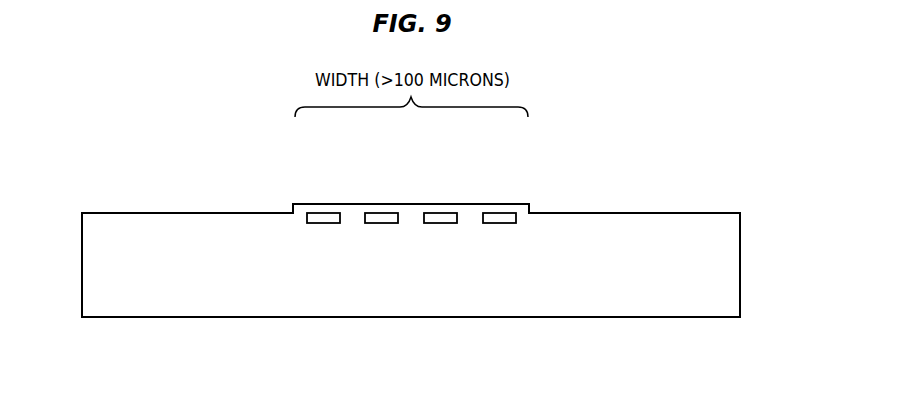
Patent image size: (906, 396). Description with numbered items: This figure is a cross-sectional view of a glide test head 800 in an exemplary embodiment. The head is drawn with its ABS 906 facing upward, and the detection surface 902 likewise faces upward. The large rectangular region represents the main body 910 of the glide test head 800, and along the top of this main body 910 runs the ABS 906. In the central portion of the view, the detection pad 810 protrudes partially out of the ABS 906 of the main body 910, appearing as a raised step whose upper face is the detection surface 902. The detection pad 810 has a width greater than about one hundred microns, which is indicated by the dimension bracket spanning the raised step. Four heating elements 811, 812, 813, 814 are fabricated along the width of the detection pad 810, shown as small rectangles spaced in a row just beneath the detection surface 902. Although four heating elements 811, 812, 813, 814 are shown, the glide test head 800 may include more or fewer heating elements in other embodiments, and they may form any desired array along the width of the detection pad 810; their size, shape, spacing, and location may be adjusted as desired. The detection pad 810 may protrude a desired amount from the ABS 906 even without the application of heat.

The glide test head 800 is at (608, 98).
The detection pad 810 is at (540, 206).
The heating element 811 is at (323, 223).
The heating element 812 is at (381, 223).
The heating element 813 is at (440, 223).
The heating element 814 is at (499, 223).
The detection surface 902 is at (413, 199).
The ABS 906 is at (190, 207).
The main body 910 is at (174, 298).